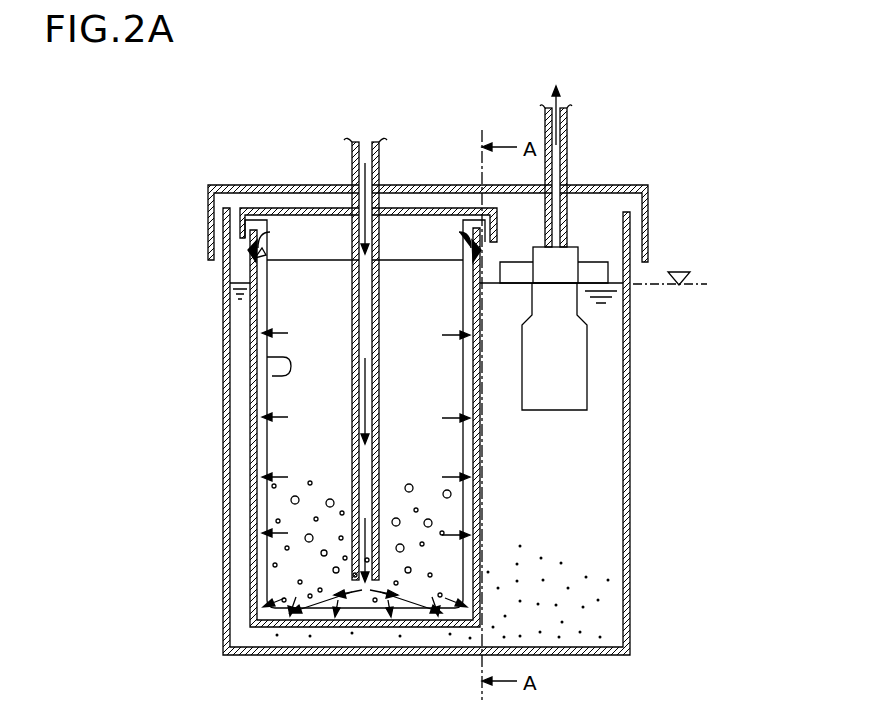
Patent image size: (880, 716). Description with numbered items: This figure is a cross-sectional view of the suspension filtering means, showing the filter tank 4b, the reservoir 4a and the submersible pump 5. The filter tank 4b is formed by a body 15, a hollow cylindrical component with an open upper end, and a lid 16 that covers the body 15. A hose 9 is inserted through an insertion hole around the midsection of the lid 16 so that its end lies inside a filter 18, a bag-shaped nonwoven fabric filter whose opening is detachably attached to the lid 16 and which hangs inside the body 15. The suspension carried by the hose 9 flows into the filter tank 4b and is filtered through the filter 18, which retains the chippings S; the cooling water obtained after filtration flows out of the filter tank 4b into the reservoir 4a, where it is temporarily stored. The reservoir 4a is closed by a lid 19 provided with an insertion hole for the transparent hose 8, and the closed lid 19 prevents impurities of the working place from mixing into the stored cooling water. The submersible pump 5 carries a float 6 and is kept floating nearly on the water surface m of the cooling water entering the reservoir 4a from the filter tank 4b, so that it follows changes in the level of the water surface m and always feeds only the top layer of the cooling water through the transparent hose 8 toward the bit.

The reservoir 4a is at (570, 488).
The filter tank 4b is at (312, 462).
The submersible pump 5 is at (575, 385).
The float 6 is at (590, 267).
The transparent hose 8 is at (568, 162).
The hose 9 is at (355, 145).
The body 15 is at (253, 418).
The lid 16 is at (300, 208).
The filter 18 is at (277, 357).
The lid 19 is at (436, 187).
The chippings S is at (592, 600).
The water surface m is at (679, 277).